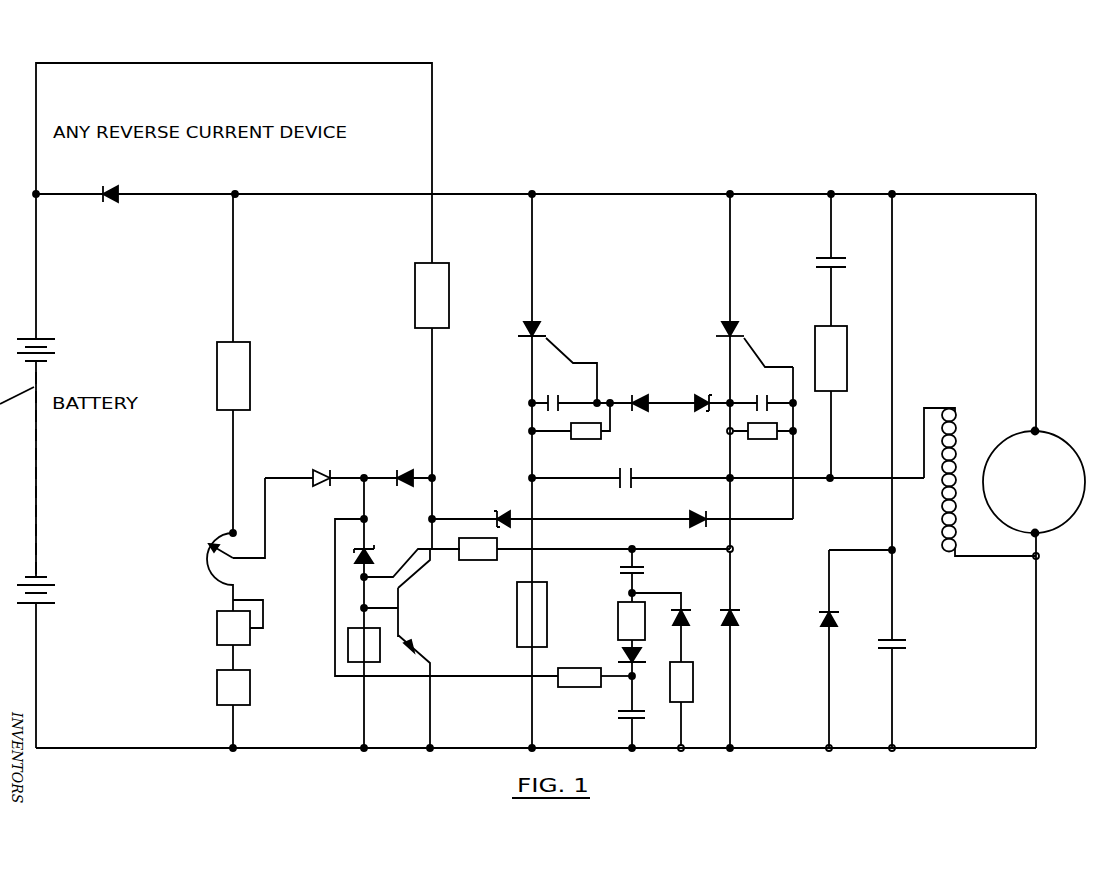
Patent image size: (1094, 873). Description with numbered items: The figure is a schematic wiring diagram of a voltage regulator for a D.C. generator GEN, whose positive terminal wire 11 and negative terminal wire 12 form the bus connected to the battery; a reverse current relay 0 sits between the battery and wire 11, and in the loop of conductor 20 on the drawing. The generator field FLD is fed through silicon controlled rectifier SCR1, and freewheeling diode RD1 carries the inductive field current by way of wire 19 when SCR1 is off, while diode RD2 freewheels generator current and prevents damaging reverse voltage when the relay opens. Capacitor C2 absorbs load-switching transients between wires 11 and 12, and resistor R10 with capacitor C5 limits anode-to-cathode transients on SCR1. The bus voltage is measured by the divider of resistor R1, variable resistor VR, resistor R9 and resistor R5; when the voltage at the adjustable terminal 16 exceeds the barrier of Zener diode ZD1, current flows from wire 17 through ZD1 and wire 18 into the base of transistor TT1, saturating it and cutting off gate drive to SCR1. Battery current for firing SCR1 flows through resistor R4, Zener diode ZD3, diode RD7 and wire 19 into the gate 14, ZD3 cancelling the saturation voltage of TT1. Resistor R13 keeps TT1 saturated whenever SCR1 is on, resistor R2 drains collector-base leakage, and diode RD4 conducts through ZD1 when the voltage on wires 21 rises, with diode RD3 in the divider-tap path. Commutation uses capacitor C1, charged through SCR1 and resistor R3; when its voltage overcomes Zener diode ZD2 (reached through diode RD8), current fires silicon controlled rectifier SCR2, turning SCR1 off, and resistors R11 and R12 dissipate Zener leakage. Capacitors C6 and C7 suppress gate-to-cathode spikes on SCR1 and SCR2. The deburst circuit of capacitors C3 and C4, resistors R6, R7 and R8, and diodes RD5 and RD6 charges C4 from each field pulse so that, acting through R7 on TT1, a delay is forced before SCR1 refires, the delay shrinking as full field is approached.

The reverse current relay 0 is at (111, 204).
The positive terminal wire 11 is at (947, 193).
The negative terminal wire 12 is at (947, 750).
The gate of SCR1 14 is at (762, 353).
The adjustable terminal of VR 16 is at (243, 562).
The wire 17 is at (366, 519).
The wire 18 is at (366, 592).
The wire 19 is at (795, 503).
The reverse current device loop conductor 20 is at (432, 124).
The wires 21 is at (433, 398).
The resistor R1 is at (245, 363).
The resistor R2 is at (375, 648).
The resistor R3 is at (546, 614).
The resistor R4 is at (444, 295).
The resistor R5 is at (245, 709).
The resistor R6 is at (643, 625).
The resistor R7 is at (595, 667).
The resistor R8 is at (693, 703).
The resistor R9 is at (224, 635).
The resistor R10 is at (846, 402).
The resistor R11 is at (569, 436).
The resistor R12 is at (761, 446).
The resistor R13 is at (596, 561).
The variable resistor VR is at (216, 564).
The capacitor C1 is at (726, 492).
The capacitor C2 is at (903, 471).
The capacitor C3 is at (645, 575).
The capacitor C4 is at (636, 720).
The capacitor C5 is at (836, 260).
The capacitor C6 is at (763, 396).
The capacitor C7 is at (580, 394).
The diode RD1 is at (741, 650).
The diode RD2 is at (857, 647).
The diode RD3 is at (314, 467).
The diode RD4 is at (398, 467).
The diode RD5 is at (645, 677).
The diode RD6 is at (674, 627).
The diode RD7 is at (737, 510).
The diode RD8 is at (659, 393).
The Zener reference diode ZD1 is at (379, 557).
The Zener diode ZD2 is at (704, 417).
The Zener diode ZD3 is at (559, 510).
The silicon controlled rectifier SCR1 is at (751, 329).
The silicon controlled rectifier SCR2 is at (557, 362).
The transistor TT1 is at (415, 648).
The field FLD is at (981, 483).
The generator GEN is at (1034, 471).